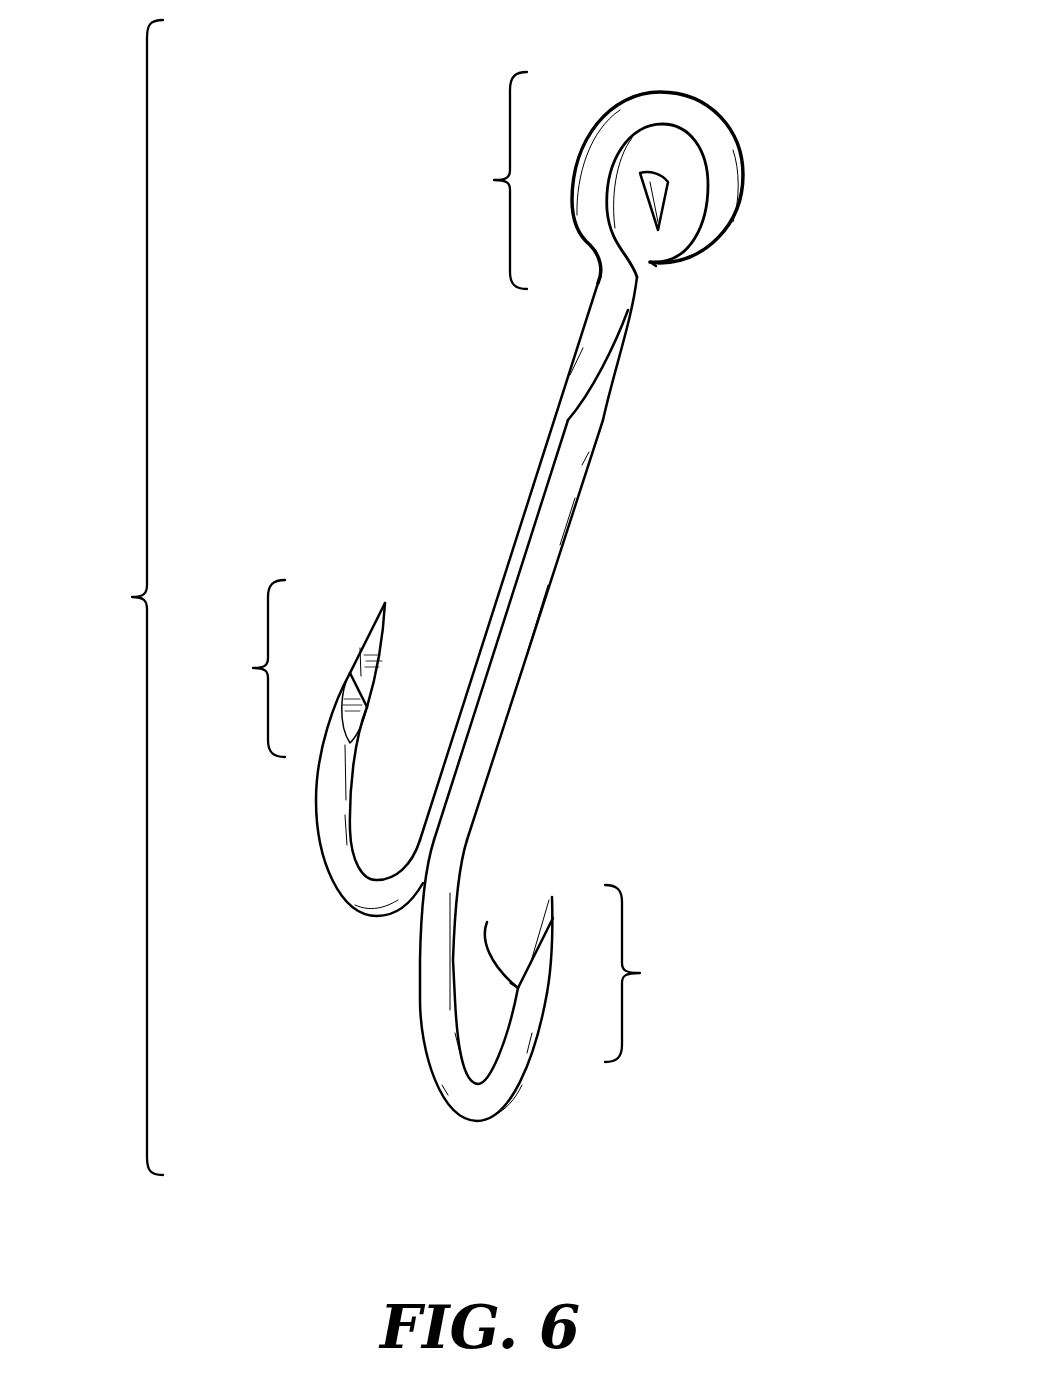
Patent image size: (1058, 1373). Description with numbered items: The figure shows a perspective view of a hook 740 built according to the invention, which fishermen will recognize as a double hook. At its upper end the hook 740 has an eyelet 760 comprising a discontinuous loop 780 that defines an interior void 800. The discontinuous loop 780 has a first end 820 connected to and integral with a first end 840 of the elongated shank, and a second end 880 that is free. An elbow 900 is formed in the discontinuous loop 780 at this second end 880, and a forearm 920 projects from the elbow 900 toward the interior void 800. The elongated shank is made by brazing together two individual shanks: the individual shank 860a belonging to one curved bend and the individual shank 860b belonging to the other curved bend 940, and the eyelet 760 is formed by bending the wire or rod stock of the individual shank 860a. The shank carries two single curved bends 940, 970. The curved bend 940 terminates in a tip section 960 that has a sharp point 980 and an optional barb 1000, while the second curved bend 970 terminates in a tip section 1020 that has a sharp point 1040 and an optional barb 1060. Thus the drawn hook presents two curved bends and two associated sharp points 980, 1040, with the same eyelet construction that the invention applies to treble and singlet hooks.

The hook 740 is at (111, 597).
The eyelet 760 is at (479, 180).
The discontinuous loop 780 is at (618, 113).
The interior void 800 is at (677, 145).
The first end of discontinuous loop 820 is at (637, 283).
The first end of elongated shank 840 is at (623, 337).
The individual shank 860a is at (557, 543).
The individual shank 860b is at (513, 548).
The second end of discontinuous loop 880 is at (742, 243).
The elbow 900 is at (653, 258).
The forearm 920 is at (667, 190).
The curved bend 940 is at (345, 896).
The tip section 960 is at (265, 690).
The curved bend 970 is at (455, 1107).
The sharp point 980 is at (385, 603).
The barb 1000 is at (367, 707).
The tip section 1020 is at (638, 973).
The sharp point 1040 is at (552, 897).
The barb 1060 is at (487, 922).